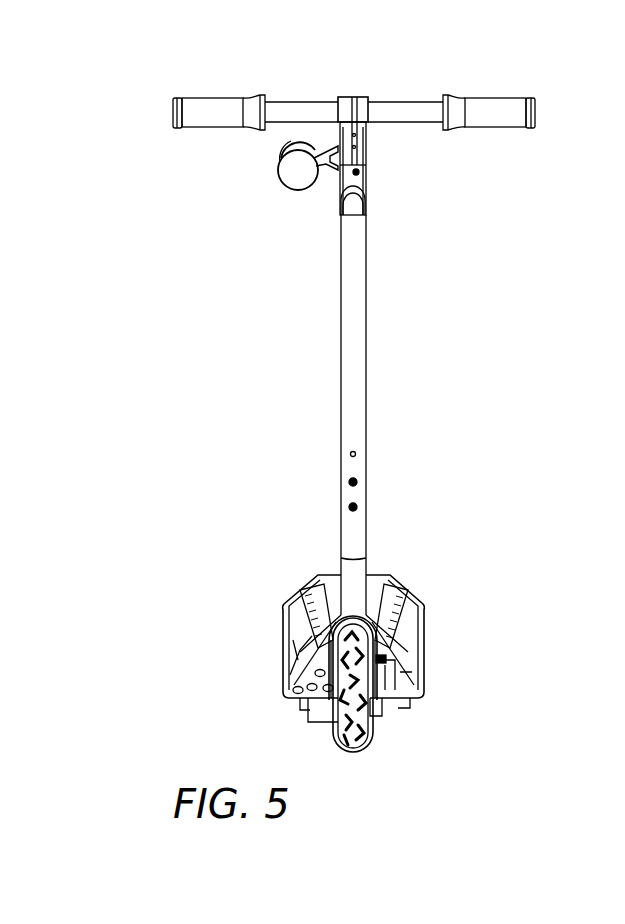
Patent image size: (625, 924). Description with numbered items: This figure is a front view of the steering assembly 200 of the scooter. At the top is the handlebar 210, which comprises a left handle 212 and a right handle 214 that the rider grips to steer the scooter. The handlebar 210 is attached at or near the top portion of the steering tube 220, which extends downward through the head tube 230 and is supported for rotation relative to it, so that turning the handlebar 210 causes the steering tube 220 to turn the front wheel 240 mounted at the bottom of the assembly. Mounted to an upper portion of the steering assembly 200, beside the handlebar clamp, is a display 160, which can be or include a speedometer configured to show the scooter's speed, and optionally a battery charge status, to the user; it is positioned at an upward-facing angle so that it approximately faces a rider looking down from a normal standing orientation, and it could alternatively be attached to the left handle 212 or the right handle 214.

The steering assembly 200 is at (158, 340).
The handlebar 210 is at (295, 100).
The left handle 212 is at (495, 108).
The right handle 214 is at (213, 108).
The display 160 is at (283, 178).
The steering tube 220 is at (353, 312).
The head tube 230 is at (353, 568).
The front wheel 240 is at (362, 742).